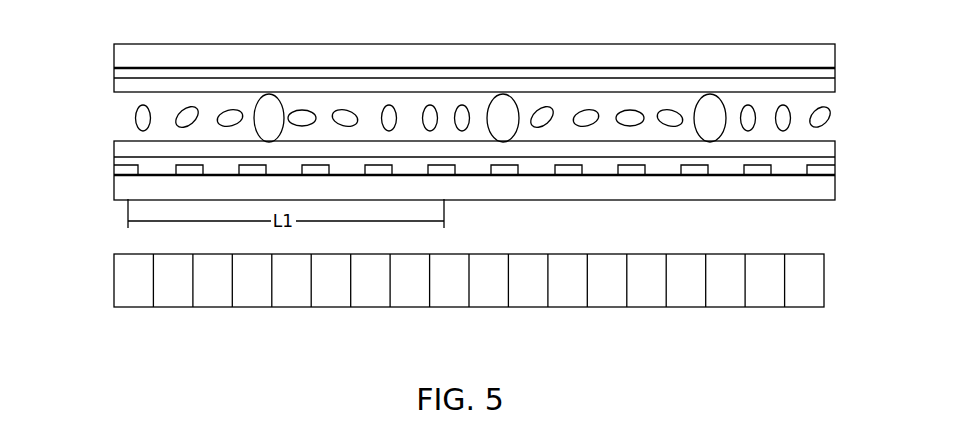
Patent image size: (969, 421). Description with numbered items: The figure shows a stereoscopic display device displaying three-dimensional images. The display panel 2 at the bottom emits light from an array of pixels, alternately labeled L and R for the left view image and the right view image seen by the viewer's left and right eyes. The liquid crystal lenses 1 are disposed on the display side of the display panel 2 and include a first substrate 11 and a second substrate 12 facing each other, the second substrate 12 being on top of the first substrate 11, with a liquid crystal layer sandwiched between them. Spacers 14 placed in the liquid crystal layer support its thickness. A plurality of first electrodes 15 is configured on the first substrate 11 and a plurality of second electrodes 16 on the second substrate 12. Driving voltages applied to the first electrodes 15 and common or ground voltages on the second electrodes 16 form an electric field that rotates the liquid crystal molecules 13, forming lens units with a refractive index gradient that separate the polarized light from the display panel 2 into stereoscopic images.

The liquid crystal lenses 1 is at (840, 134).
The display panel 2 is at (822, 274).
The first substrate 11 is at (118, 187).
The second substrate 12 is at (113, 57).
The liquid crystal molecules 13 is at (135, 118).
The spacers 14 is at (275, 109).
The first electrodes 15 is at (120, 172).
The second electrodes 16 is at (115, 74).